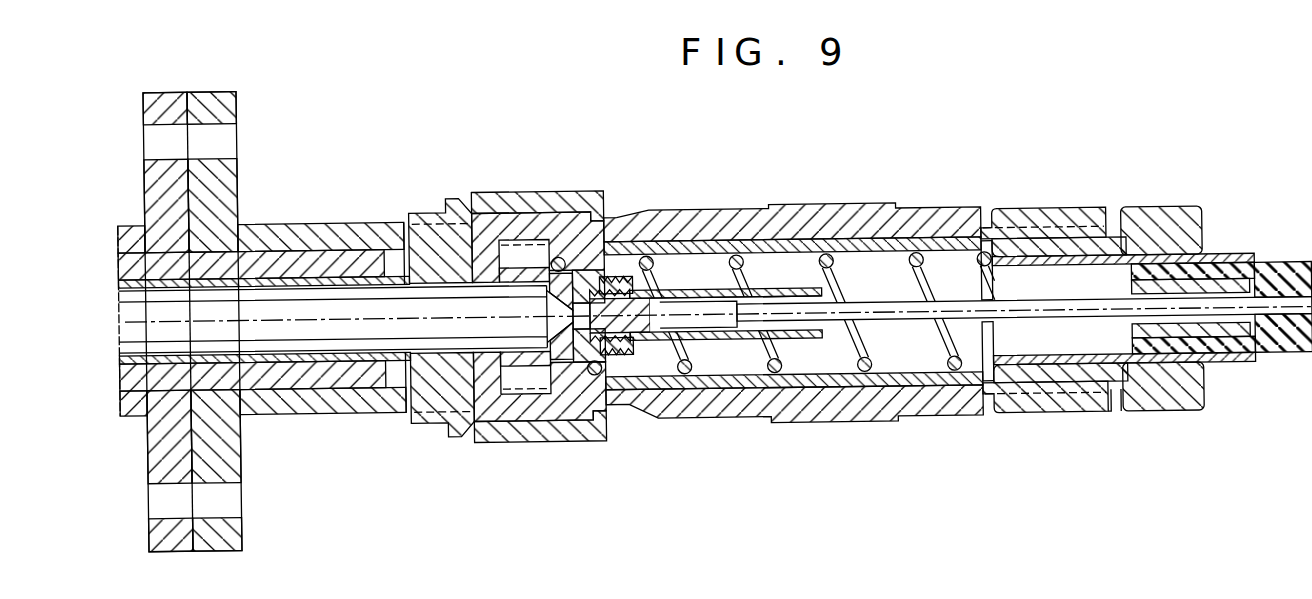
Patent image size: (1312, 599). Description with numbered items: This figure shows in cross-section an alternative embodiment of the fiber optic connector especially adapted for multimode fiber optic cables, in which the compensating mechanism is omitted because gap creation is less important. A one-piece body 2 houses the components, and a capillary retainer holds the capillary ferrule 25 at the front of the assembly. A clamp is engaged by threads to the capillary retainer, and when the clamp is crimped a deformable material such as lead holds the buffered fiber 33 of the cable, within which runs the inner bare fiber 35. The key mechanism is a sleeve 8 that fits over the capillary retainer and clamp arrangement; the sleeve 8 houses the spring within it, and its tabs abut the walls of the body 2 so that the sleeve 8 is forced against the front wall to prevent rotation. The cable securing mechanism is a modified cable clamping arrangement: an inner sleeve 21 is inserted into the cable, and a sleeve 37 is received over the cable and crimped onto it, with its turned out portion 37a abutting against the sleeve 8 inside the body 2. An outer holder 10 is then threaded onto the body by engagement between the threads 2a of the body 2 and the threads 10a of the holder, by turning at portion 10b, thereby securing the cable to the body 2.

The one-piece body 2 is at (930, 220).
The threads 2a is at (1082, 250).
The sleeve 8 is at (826, 250).
The outer holder 10 is at (1116, 410).
The threads 10a is at (1042, 236).
The turning portion 10b is at (1152, 226).
The inner sleeve 21 is at (1240, 300).
The capillary ferrule 25 is at (386, 318).
The buffered fiber 33 is at (789, 313).
The inner bare fiber 35 is at (633, 328).
The sleeve 37 is at (1224, 277).
The turned out portion 37a is at (993, 262).